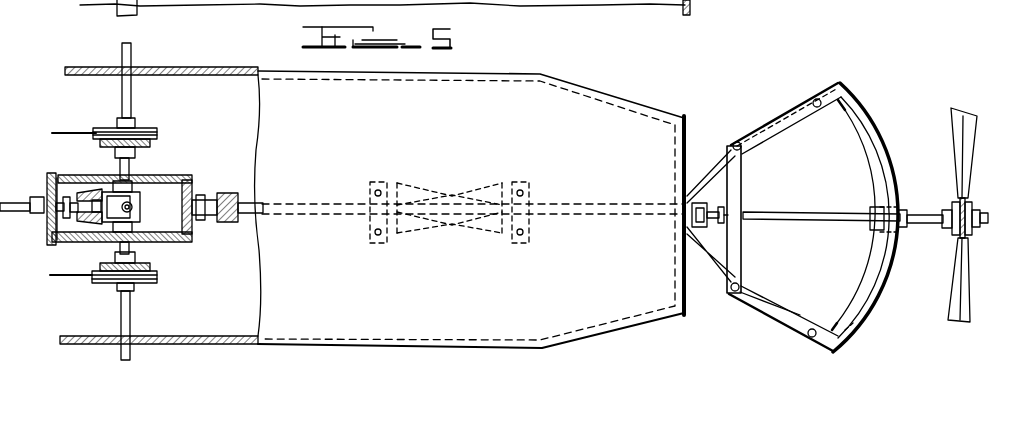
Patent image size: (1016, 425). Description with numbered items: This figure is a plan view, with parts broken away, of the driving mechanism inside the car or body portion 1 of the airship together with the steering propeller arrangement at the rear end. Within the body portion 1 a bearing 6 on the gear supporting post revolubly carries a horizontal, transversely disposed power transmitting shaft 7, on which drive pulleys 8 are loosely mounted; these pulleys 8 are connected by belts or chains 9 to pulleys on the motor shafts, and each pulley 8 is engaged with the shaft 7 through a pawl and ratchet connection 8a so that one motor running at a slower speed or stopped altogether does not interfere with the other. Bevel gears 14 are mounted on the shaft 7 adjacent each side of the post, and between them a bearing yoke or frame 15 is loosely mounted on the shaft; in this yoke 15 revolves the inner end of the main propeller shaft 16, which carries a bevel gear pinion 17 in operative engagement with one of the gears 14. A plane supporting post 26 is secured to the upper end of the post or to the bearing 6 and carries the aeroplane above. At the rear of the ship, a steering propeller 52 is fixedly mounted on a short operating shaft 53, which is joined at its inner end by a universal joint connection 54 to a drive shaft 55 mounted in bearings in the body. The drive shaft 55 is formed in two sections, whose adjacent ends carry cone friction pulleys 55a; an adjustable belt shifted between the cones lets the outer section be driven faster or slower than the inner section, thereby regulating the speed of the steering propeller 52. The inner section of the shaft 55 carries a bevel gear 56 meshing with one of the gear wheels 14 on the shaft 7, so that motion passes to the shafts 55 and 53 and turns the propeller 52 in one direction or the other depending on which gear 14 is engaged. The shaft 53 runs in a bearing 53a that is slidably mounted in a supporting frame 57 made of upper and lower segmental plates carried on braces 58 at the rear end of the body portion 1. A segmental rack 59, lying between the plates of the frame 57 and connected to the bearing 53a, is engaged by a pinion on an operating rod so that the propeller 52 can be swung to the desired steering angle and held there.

The car or body portion 1 is at (227, 85).
The bearing 6 is at (140, 208).
The power transmitting shaft 7 is at (122, 90).
The drive pulleys 8 is at (141, 129).
The pawl and ratchet connection 8a is at (141, 147).
The belts or chains 9 is at (66, 132).
The bevel gears 14 is at (180, 180).
The bearing yoke or frame 15 is at (72, 217).
The main propeller shaft 16 is at (15, 203).
The bevel gear pinion 17 is at (52, 175).
The plane supporting post 26 is at (148, 180).
The steering propeller 52 is at (962, 140).
The operating shaft 53 is at (797, 213).
The bearing 53a is at (878, 224).
The universal joint connection 54 is at (690, 215).
The drive shaft 55 is at (262, 207).
The cone friction pulleys 55a is at (427, 210).
The bevel gear 56 is at (198, 199).
The supporting frame 57 is at (767, 123).
The braces 58 is at (699, 178).
The segmental rack 59 is at (848, 117).